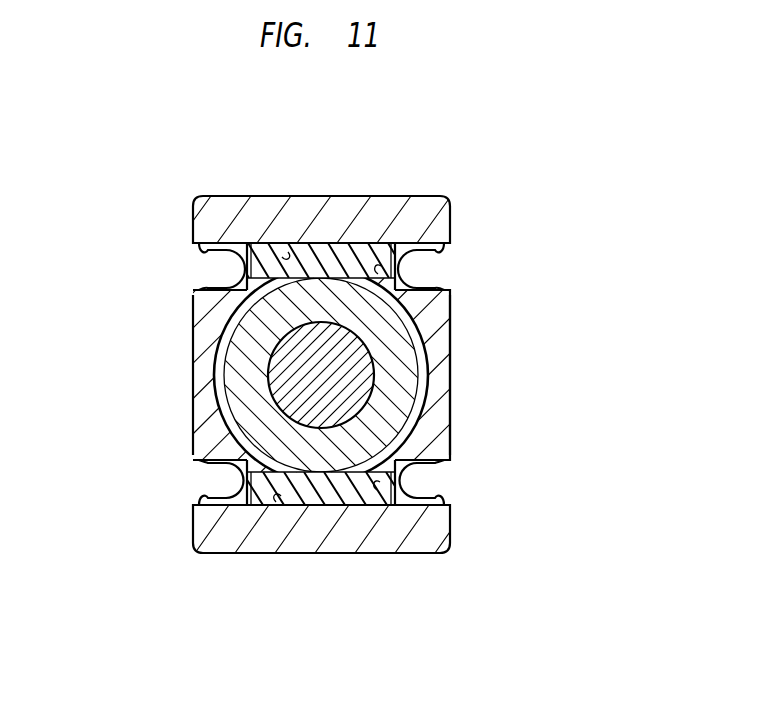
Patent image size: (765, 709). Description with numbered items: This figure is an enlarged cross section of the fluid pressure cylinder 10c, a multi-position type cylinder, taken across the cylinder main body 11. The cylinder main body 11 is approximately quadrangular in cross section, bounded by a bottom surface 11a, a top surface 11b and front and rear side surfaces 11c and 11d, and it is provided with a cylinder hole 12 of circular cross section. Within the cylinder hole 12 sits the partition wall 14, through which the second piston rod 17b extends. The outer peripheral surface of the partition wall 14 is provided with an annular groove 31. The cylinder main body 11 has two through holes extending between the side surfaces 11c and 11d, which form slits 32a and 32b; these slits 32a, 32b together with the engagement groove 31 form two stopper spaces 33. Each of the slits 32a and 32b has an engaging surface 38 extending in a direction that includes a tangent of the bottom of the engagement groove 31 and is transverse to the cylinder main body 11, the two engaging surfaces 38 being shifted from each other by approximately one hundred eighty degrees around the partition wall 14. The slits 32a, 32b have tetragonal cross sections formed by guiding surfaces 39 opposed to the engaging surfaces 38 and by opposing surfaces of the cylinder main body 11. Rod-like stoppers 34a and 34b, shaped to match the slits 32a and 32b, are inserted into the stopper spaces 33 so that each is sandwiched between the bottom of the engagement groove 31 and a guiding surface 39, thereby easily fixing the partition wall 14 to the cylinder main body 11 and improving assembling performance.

The fluid pressure cylinder 10c is at (477, 167).
The cylinder main body 11 is at (438, 537).
The bottom surface 11a is at (378, 553).
The top surface 11b is at (402, 196).
The front side surface 11c is at (450, 410).
The rear side surface 11d is at (193, 443).
The cylinder hole 12 is at (399, 326).
The partition wall 14 is at (400, 378).
The second piston rod 17b is at (302, 378).
The annular groove 31 is at (219, 400).
The slit 32a is at (396, 247).
The slit 32b is at (396, 502).
The stopper space 33 is at (238, 253).
The stopper 34a is at (333, 260).
The stopper 34b is at (337, 498).
The engaging surface 38 is at (381, 266).
The guiding surface 39 is at (288, 252).